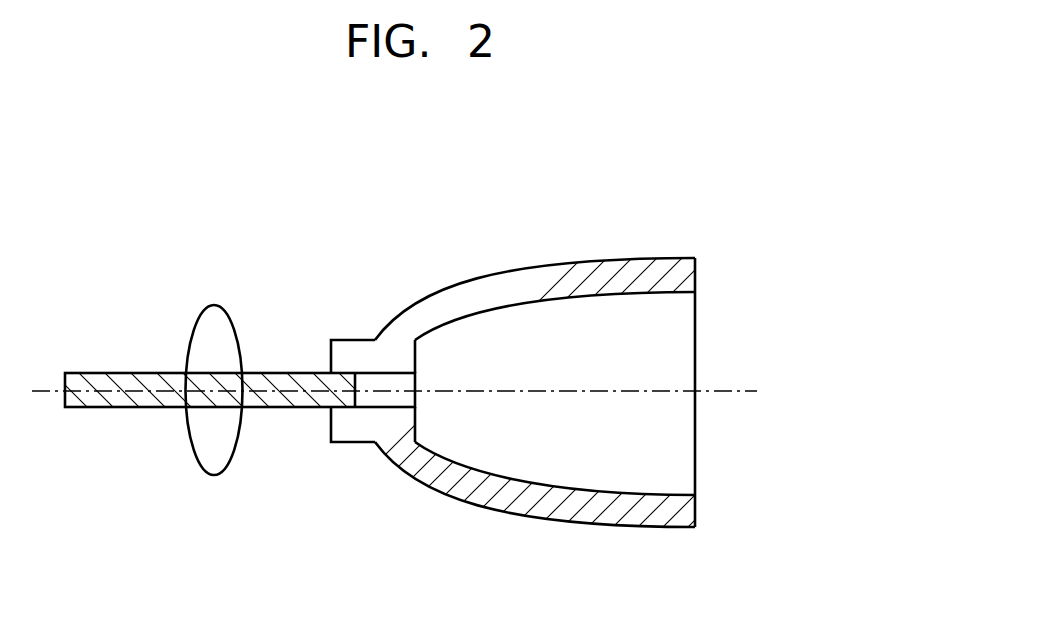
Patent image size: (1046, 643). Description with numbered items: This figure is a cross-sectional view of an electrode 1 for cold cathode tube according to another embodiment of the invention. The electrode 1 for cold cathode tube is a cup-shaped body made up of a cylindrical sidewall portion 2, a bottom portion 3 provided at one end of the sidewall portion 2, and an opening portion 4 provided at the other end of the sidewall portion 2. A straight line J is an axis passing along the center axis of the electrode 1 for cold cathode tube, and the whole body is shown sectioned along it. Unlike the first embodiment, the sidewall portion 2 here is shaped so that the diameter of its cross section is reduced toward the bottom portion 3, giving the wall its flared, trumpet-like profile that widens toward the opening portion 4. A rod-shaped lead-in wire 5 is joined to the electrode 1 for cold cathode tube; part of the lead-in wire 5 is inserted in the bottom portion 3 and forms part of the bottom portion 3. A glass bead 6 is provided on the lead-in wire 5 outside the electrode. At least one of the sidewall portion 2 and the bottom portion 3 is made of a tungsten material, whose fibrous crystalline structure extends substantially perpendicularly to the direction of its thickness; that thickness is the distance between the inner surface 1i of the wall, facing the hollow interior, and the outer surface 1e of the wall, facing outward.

The electrode for cold cathode tube 1 is at (656, 360).
The sidewall portion 2 is at (577, 281).
The bottom portion 3 is at (331, 350).
The opening portion 4 is at (695, 365).
The lead-in wire 5 is at (148, 366).
The glass bead 6 is at (214, 305).
The inner surface 1i is at (512, 478).
The outer surface 1e is at (510, 518).
The straight line (axis) J is at (408, 394).